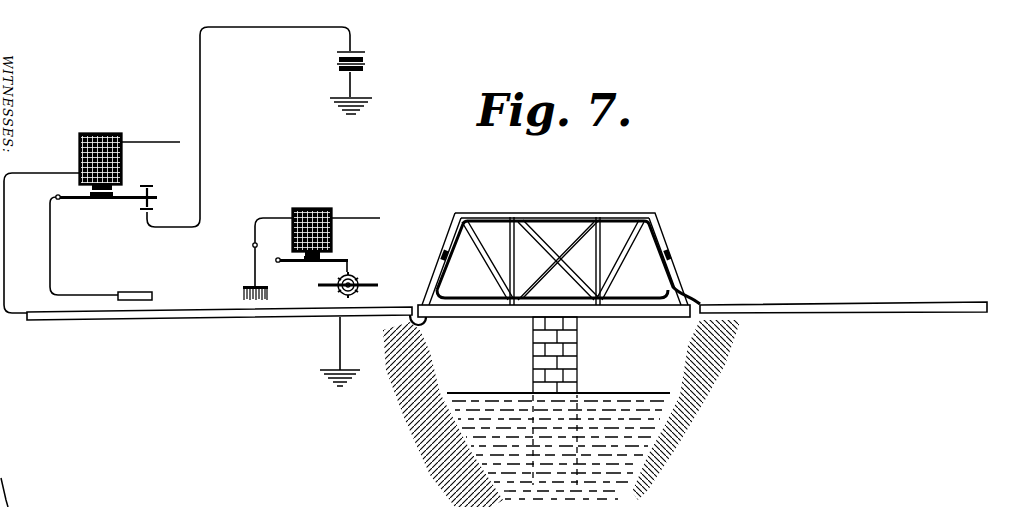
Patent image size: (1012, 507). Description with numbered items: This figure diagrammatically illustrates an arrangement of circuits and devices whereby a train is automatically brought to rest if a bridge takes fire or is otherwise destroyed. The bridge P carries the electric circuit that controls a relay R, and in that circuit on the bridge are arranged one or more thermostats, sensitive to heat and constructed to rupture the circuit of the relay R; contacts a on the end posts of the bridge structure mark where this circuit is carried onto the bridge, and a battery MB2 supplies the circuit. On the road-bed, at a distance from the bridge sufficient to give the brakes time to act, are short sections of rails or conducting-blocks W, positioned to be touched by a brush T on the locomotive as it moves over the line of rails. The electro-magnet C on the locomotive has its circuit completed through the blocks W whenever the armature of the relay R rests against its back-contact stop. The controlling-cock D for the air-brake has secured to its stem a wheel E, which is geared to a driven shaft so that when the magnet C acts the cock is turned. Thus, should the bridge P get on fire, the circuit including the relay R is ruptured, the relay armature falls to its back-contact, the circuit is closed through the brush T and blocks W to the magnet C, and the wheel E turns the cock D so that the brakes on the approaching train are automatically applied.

The relay R is at (122, 162).
The main battery MB2 is at (374, 80).
The electro-magnet C is at (332, 232).
The brush T is at (241, 294).
The wheel E is at (336, 292).
The controlling-cock D is at (360, 292).
The conducting-blocks W is at (135, 285).
The bridge P is at (653, 213).
The bridge contacts a is at (443, 257).